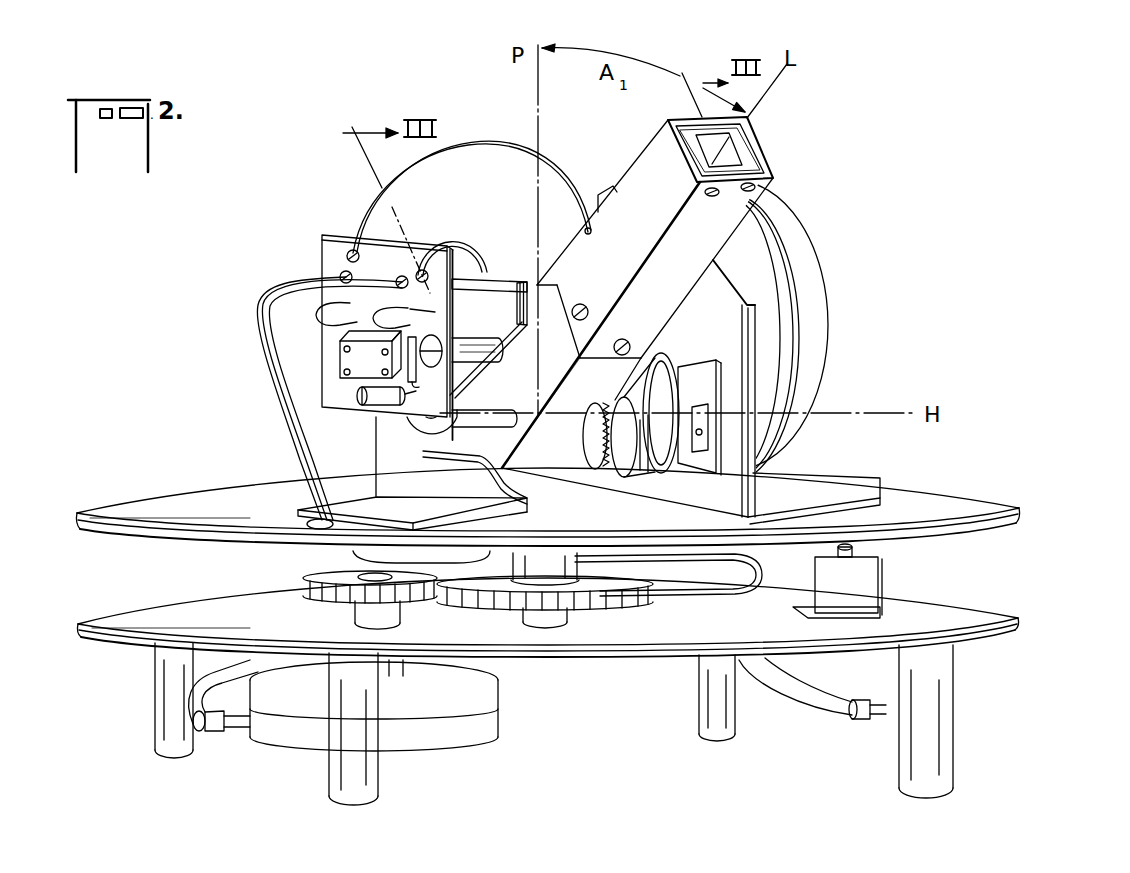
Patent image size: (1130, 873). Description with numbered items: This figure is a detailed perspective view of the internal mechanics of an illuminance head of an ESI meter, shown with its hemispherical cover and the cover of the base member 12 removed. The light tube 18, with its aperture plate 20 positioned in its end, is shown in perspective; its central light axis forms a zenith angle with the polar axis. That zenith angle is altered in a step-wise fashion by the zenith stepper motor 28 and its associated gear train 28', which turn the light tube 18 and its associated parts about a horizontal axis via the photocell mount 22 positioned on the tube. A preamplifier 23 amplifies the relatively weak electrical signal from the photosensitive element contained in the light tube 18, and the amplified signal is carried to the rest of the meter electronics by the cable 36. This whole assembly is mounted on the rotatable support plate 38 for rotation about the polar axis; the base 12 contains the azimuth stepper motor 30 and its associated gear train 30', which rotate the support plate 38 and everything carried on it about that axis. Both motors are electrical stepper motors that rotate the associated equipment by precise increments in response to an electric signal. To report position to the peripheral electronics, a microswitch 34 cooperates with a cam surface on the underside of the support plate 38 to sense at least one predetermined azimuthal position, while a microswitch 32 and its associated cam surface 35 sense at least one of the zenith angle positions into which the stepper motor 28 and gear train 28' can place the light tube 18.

The base member 12 is at (992, 655).
The light tube 18 is at (763, 193).
The aperture plate 20 is at (745, 158).
The photocell mount 22 is at (593, 405).
The preamplifier 23 is at (328, 252).
The zenith stepper motor 28 is at (757, 330).
The gear train 28' is at (604, 461).
The azimuth stepper motor 30 is at (343, 722).
The gear train 30' is at (478, 592).
The microswitch 32 is at (702, 382).
The microswitch 34 is at (882, 578).
The cam surface 35 is at (648, 378).
The cable 36 is at (815, 704).
The rotatable support plate 38 is at (995, 496).